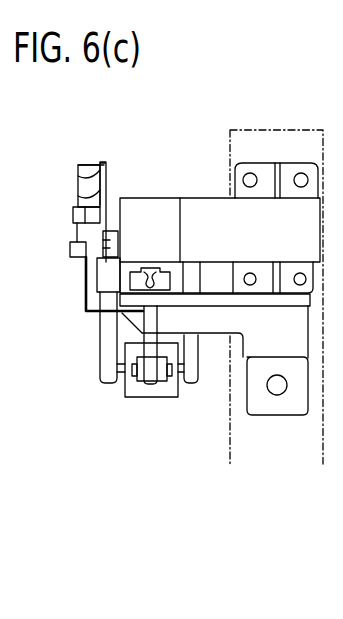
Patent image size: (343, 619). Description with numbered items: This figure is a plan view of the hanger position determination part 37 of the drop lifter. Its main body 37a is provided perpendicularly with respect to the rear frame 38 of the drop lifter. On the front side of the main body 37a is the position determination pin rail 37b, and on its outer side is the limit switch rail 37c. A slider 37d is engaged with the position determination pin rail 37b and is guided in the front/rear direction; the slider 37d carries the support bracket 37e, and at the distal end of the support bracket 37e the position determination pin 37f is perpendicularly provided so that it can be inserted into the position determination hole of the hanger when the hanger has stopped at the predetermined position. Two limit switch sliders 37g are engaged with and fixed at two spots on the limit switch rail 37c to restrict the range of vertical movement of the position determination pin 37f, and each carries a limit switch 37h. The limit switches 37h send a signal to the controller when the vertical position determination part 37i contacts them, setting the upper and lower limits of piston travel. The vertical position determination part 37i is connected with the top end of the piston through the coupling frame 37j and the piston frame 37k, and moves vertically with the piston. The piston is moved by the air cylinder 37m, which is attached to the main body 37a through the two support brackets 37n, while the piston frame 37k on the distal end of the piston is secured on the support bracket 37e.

The hanger position determination part 37 is at (79, 328).
The main body 37a is at (137, 207).
The position determination pin rail 37b is at (152, 262).
The limit switch rail 37c is at (78, 186).
The slider 37d is at (197, 259).
The support bracket 37e is at (213, 322).
The position determination pin 37f is at (278, 390).
The limit switch slider 37g is at (81, 166).
The limit switch 37h is at (72, 223).
The vertical position determination part 37i is at (70, 250).
The coupling frame 37j is at (82, 288).
The piston frame 37k is at (150, 390).
The air cylinder 37m is at (137, 394).
The support bracket 37n is at (103, 385).
The rear frame 38 is at (278, 150).